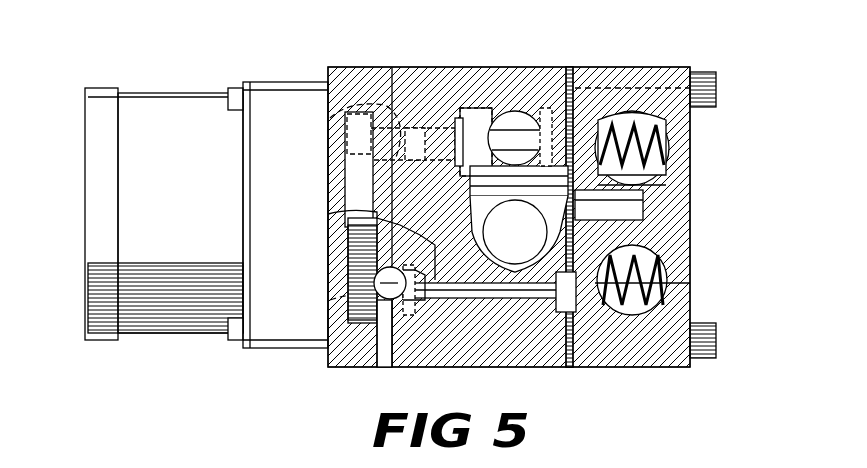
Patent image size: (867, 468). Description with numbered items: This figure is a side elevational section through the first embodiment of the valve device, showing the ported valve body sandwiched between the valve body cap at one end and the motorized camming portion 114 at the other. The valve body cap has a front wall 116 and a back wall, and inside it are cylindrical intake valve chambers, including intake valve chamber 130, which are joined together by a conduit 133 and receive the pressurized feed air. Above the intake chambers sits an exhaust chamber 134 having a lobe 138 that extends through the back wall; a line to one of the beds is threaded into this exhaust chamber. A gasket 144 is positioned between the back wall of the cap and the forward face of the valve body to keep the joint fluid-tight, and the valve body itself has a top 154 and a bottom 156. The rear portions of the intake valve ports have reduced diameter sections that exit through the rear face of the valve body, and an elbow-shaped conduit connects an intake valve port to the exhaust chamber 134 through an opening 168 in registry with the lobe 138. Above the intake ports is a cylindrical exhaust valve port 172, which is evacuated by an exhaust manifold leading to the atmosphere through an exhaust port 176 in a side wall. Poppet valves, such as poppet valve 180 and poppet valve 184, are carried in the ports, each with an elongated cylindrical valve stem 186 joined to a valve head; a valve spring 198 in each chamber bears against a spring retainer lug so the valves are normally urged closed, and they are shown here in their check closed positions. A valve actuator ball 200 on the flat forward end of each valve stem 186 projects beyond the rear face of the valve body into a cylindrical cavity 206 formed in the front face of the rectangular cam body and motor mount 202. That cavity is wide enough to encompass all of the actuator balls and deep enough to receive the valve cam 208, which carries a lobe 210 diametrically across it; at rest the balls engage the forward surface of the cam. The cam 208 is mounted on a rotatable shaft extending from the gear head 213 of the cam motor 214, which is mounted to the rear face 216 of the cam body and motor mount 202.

The motorized camming portion 114 is at (243, 80).
The front wall 116 is at (690, 152).
The intake valve chamber 130 is at (630, 367).
The conduit 133 is at (674, 367).
The exhaust chamber 134 is at (641, 67).
The lobe 138 is at (644, 210).
The gasket 144 is at (575, 367).
The top 154 is at (413, 67).
The bottom 156 is at (470, 367).
The opening 168 is at (562, 67).
The exhaust valve port 172 is at (480, 67).
The exhaust port 176 is at (511, 111).
The poppet valve 180 is at (424, 304).
The poppet valve 184 is at (345, 116).
The valve stem 186 is at (528, 300).
The valve spring 198 is at (627, 67).
The valve actuator ball 200 is at (345, 155).
The cam body and motor mount 202 is at (372, 67).
The cylindrical cavity 206 is at (383, 318).
The valve cam 208 is at (352, 248).
The lobe 210 is at (374, 283).
The gear head 213 is at (300, 82).
The cam motor 214 is at (165, 108).
The rear face 216 is at (328, 68).